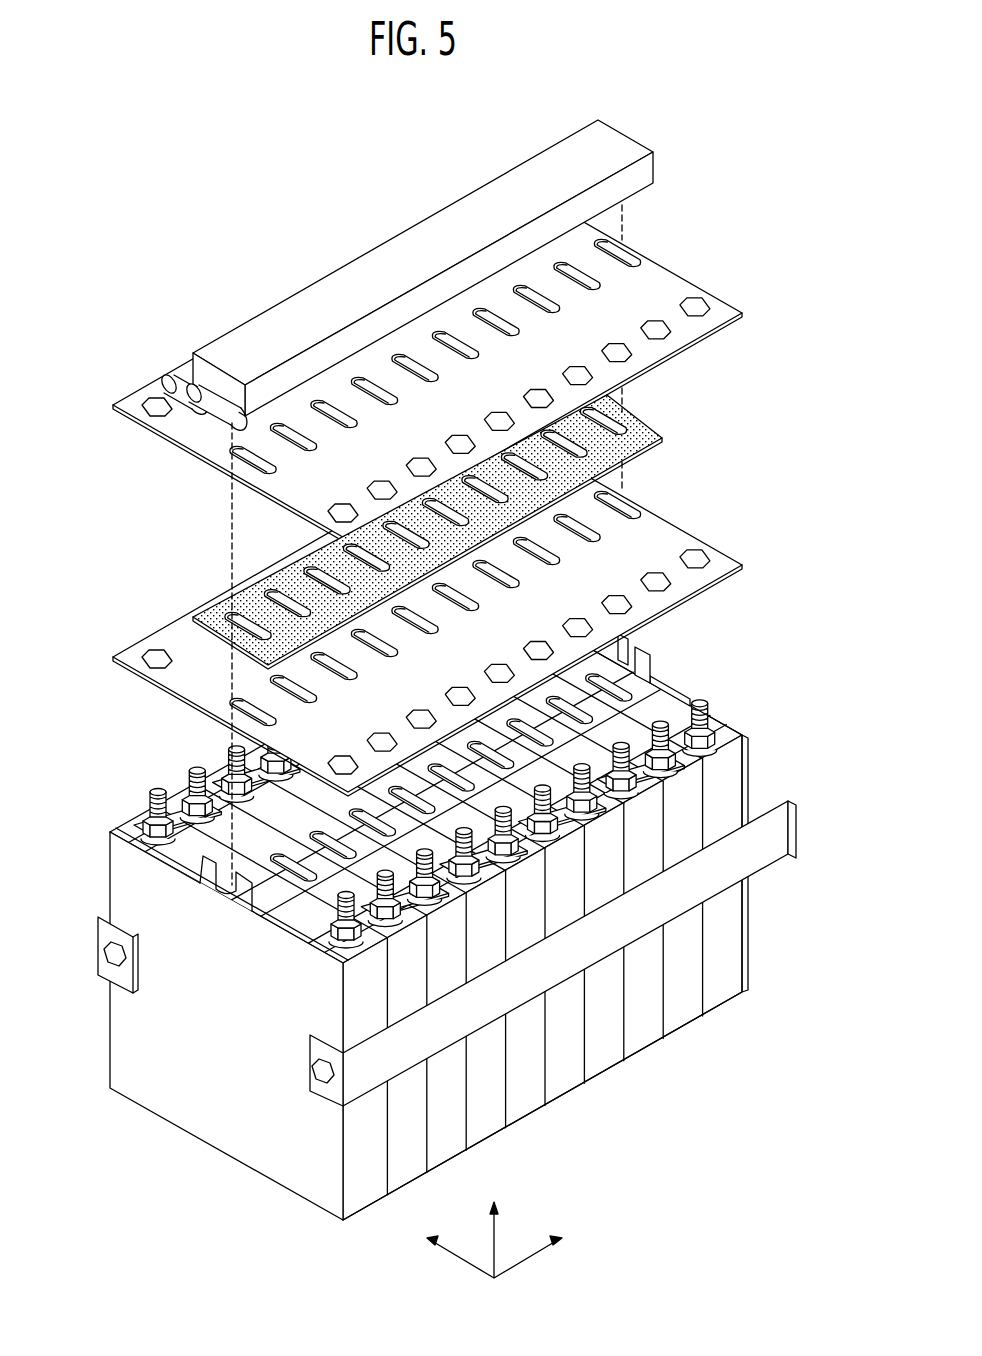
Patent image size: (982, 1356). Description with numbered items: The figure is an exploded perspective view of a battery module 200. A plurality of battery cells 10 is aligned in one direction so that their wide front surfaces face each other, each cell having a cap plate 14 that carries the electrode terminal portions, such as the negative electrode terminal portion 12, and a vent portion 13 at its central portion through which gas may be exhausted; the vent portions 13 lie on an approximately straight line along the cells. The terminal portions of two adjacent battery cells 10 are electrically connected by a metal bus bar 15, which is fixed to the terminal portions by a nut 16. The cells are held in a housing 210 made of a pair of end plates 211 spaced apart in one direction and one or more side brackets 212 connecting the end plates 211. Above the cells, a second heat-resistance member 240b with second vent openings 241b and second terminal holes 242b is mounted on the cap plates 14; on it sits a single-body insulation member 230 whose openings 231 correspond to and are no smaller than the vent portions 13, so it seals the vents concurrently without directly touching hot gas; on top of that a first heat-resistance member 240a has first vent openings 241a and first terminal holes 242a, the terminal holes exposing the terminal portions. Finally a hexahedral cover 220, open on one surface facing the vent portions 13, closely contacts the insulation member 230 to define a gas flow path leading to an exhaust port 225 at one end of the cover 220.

The battery module 200 is at (160, 176).
The battery cells 10 is at (688, 998).
The negative electrode terminal portion 12 is at (704, 700).
The vent portion 13 is at (645, 672).
The cap plate 14 is at (746, 742).
The bus bar 15 is at (178, 810).
The nut 16 is at (150, 822).
The housing 210 is at (96, 1182).
The end plates 211 is at (147, 1030).
The side bracket 212 is at (328, 1093).
The cover 220 is at (622, 142).
The exhaust port 225 is at (168, 378).
The insulation member 230 is at (664, 440).
The openings 231 is at (614, 420).
The first heat-resistance member 240a is at (652, 273).
The first vent openings 241a is at (614, 252).
The first terminal holes 242a is at (699, 305).
The second heat-resistance member 240b is at (652, 527).
The second vent openings 241b is at (609, 507).
The second terminal holes 242b is at (699, 560).